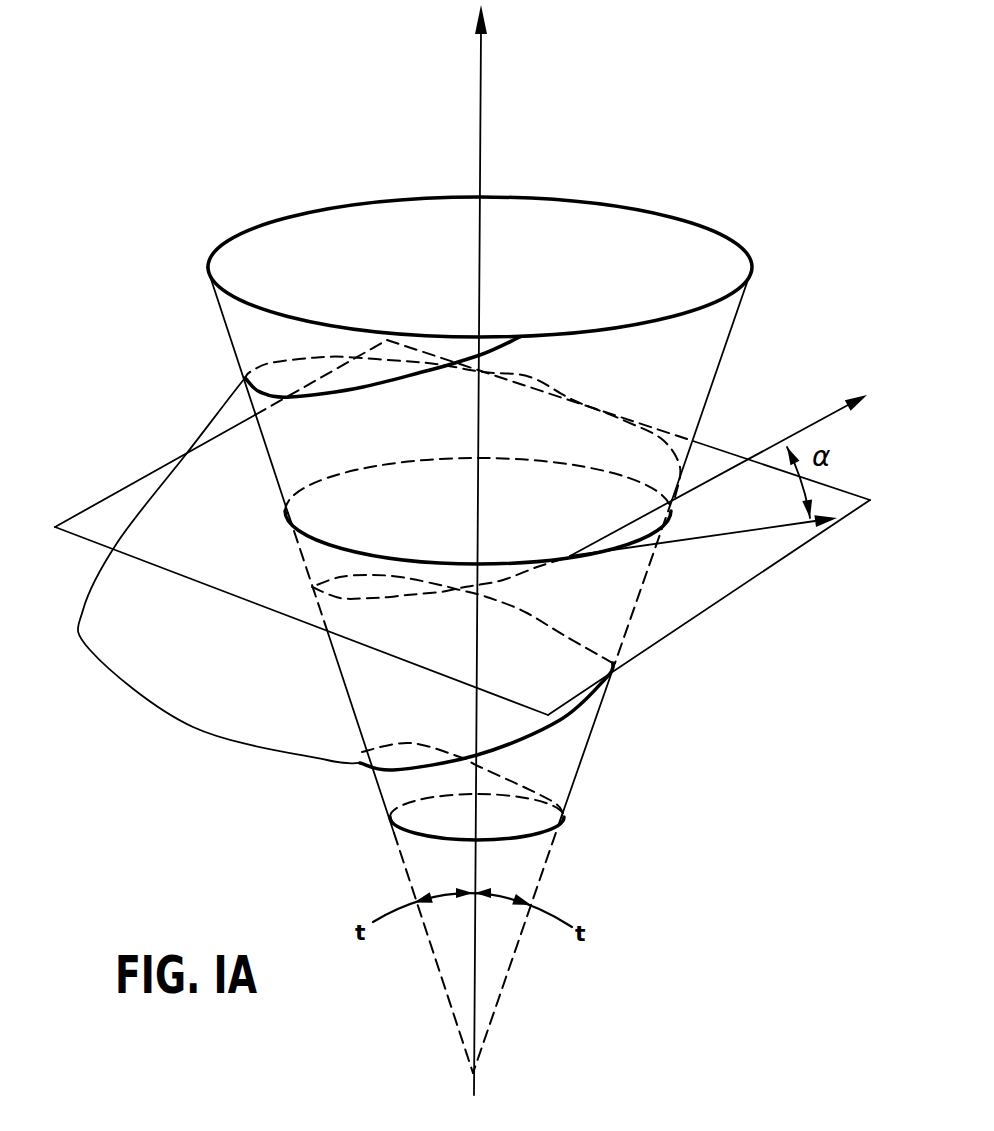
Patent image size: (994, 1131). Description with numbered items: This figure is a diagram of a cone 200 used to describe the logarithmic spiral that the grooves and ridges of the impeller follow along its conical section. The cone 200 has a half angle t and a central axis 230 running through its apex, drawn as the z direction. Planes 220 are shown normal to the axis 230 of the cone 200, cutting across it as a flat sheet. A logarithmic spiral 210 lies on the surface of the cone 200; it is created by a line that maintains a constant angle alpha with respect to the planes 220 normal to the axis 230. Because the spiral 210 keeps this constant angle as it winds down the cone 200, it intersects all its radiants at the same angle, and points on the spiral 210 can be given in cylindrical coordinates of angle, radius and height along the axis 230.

The cone 200 is at (614, 203).
The logarithmic spiral 210 is at (313, 583).
The planes 220 is at (100, 500).
The axis 230 is at (478, 90).